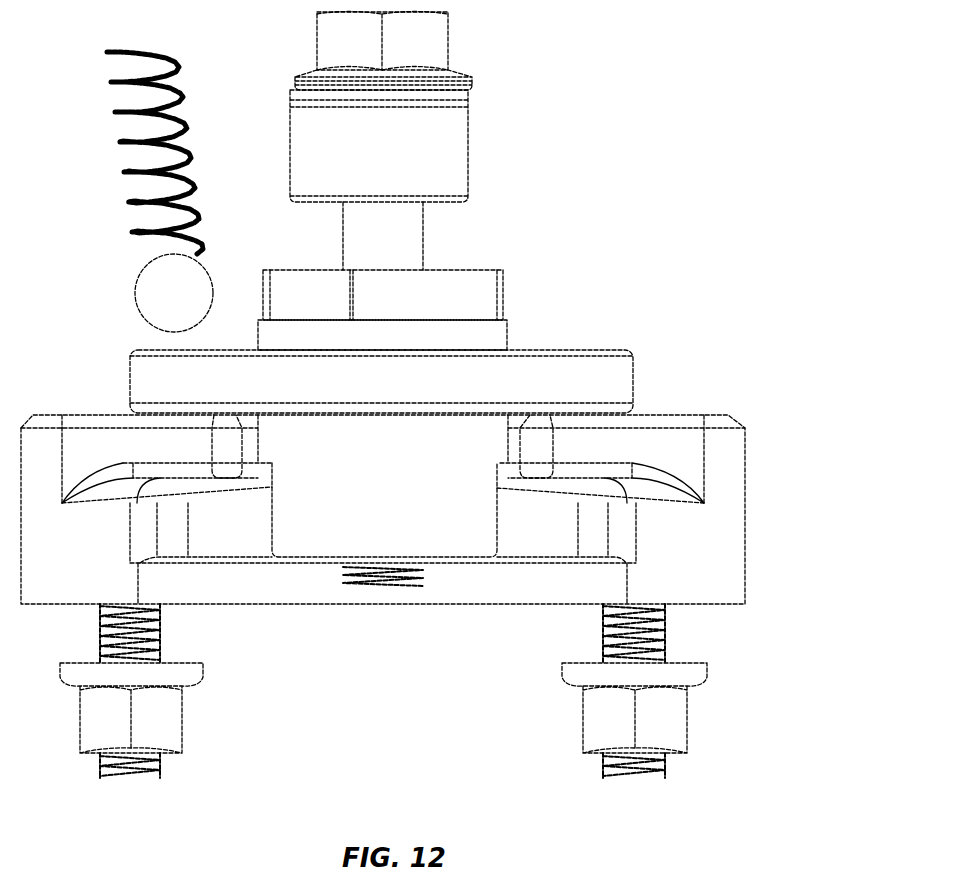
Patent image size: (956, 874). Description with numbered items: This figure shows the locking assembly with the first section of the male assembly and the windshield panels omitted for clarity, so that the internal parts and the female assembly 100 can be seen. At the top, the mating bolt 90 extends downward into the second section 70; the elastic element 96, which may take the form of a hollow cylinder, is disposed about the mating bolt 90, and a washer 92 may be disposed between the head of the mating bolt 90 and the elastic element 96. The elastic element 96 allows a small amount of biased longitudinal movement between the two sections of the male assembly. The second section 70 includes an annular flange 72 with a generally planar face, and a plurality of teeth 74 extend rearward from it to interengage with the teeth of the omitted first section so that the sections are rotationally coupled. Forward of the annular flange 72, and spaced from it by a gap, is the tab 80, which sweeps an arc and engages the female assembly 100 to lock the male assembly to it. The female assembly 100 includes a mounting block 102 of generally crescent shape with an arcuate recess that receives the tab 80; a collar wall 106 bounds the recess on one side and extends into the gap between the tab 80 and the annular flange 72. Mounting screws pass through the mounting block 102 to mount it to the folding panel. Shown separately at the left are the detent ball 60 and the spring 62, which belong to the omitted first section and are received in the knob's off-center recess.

The detent ball 60 is at (137, 295).
The spring 62 is at (140, 108).
The second section 70 is at (383, 561).
The annular flange 72 is at (429, 378).
The teeth 74 is at (428, 305).
The tab 80 is at (383, 570).
The mating bolt 90 is at (470, 233).
The washer 92 is at (446, 53).
The elastic element 96 is at (444, 146).
The female assembly 100 is at (437, 504).
The mounting block 102 is at (423, 536).
The collar wall 106 is at (476, 430).